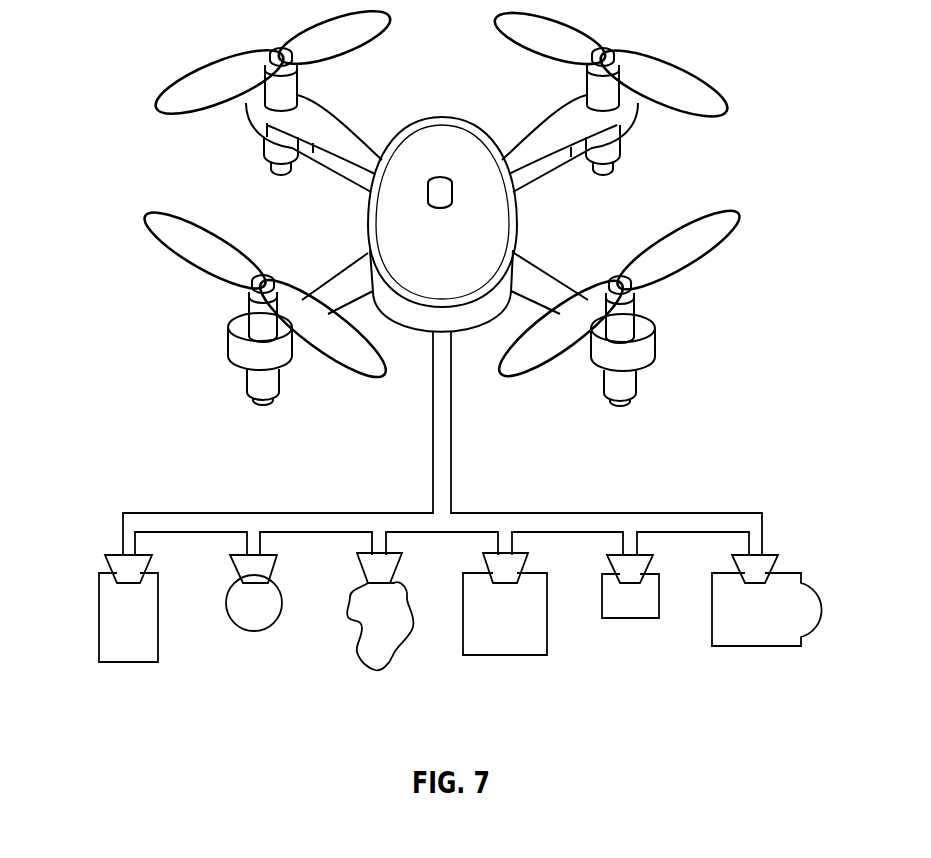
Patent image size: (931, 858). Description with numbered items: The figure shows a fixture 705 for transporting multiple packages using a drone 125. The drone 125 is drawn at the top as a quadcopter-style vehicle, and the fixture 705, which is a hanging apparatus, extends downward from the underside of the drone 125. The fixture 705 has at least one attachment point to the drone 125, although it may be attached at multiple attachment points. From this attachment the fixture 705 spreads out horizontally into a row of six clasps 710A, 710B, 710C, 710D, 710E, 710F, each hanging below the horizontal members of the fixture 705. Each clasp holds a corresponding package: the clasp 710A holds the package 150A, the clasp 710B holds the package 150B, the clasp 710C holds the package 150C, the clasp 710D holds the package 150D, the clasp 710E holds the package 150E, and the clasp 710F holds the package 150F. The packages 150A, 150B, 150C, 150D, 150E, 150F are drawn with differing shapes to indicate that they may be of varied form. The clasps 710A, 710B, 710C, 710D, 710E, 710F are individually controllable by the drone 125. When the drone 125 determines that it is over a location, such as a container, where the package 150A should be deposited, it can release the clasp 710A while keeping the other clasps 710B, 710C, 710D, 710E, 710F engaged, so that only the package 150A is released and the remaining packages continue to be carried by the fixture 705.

The drone 125 is at (430, 116).
The fixture 705 is at (452, 387).
The clasp 710A is at (113, 555).
The clasp 710B is at (240, 555).
The clasp 710C is at (367, 553).
The clasp 710D is at (513, 553).
The clasp 710E is at (640, 555).
The clasp 710F is at (768, 555).
The package 150A is at (128, 662).
The package 150B is at (257, 632).
The package 150C is at (377, 670).
The package 150D is at (505, 657).
The package 150E is at (630, 618).
The package 150F is at (755, 647).